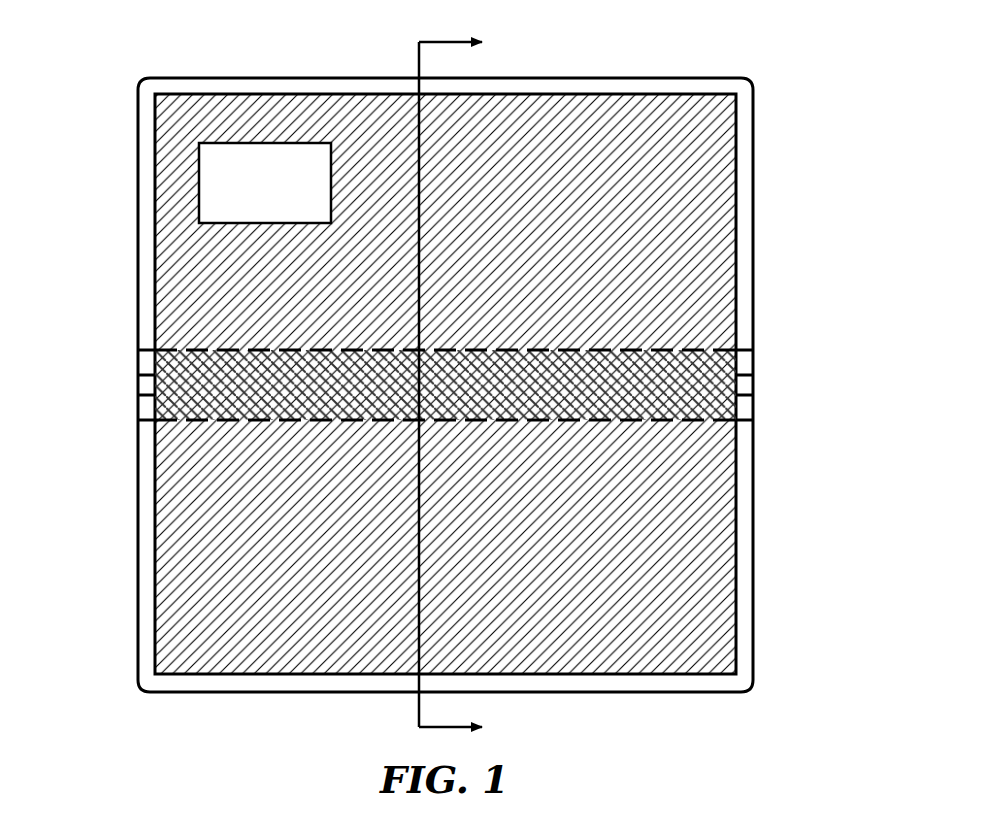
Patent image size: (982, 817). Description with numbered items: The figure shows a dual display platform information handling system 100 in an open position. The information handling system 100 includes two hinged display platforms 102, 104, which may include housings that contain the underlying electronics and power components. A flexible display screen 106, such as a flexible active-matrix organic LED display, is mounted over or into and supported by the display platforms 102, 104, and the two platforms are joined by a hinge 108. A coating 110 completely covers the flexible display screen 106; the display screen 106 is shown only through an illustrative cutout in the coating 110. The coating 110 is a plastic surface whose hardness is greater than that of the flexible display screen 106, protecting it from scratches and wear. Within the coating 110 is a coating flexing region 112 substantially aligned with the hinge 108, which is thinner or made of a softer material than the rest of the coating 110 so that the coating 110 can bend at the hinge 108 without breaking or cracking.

The information handling system 100 is at (429, 376).
The display platform 102 is at (758, 217).
The display platform 104 is at (758, 529).
The flexible display screen 106 is at (256, 174).
The hinge 108 is at (147, 385).
The coating 110 is at (165, 113).
The coating flexing region 112 is at (190, 363).